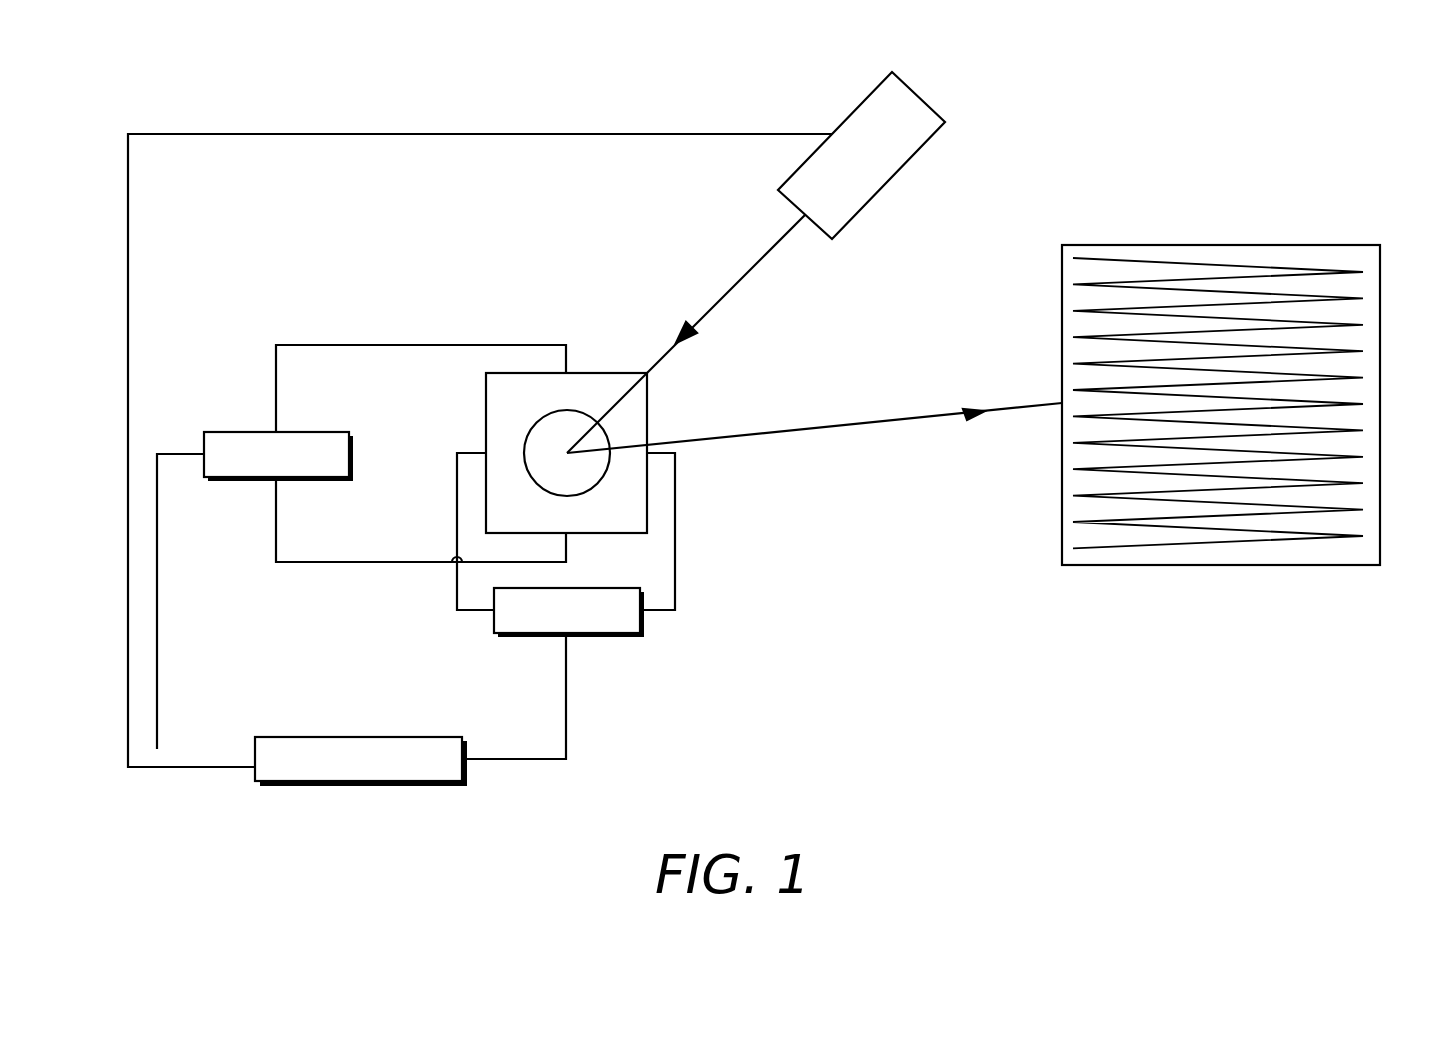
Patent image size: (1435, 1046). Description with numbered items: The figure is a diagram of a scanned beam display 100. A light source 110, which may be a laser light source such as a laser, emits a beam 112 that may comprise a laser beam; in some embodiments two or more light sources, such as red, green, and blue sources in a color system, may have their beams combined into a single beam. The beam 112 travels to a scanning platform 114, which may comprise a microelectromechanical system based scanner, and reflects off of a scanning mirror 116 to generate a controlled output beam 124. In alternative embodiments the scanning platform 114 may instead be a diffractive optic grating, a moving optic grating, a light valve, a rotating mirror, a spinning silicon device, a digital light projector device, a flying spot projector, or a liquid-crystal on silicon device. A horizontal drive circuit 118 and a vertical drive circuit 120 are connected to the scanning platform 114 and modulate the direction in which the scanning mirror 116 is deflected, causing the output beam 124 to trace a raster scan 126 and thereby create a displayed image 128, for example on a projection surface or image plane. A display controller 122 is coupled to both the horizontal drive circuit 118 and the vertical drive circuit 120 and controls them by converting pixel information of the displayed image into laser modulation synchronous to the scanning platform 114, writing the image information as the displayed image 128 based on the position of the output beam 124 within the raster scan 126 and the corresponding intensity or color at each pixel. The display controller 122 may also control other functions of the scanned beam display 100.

The scanned beam display 100 is at (1262, 78).
The light source 110 is at (920, 97).
The beam 112 is at (735, 283).
The scanning platform 114 is at (608, 373).
The scanning mirror 116 is at (598, 483).
The horizontal drive circuit 118 is at (330, 432).
The vertical drive circuit 120 is at (612, 637).
The display controller 122 is at (440, 737).
The output beam 124 is at (814, 430).
The raster scan 126 is at (1082, 258).
The displayed image 128 is at (1362, 245).